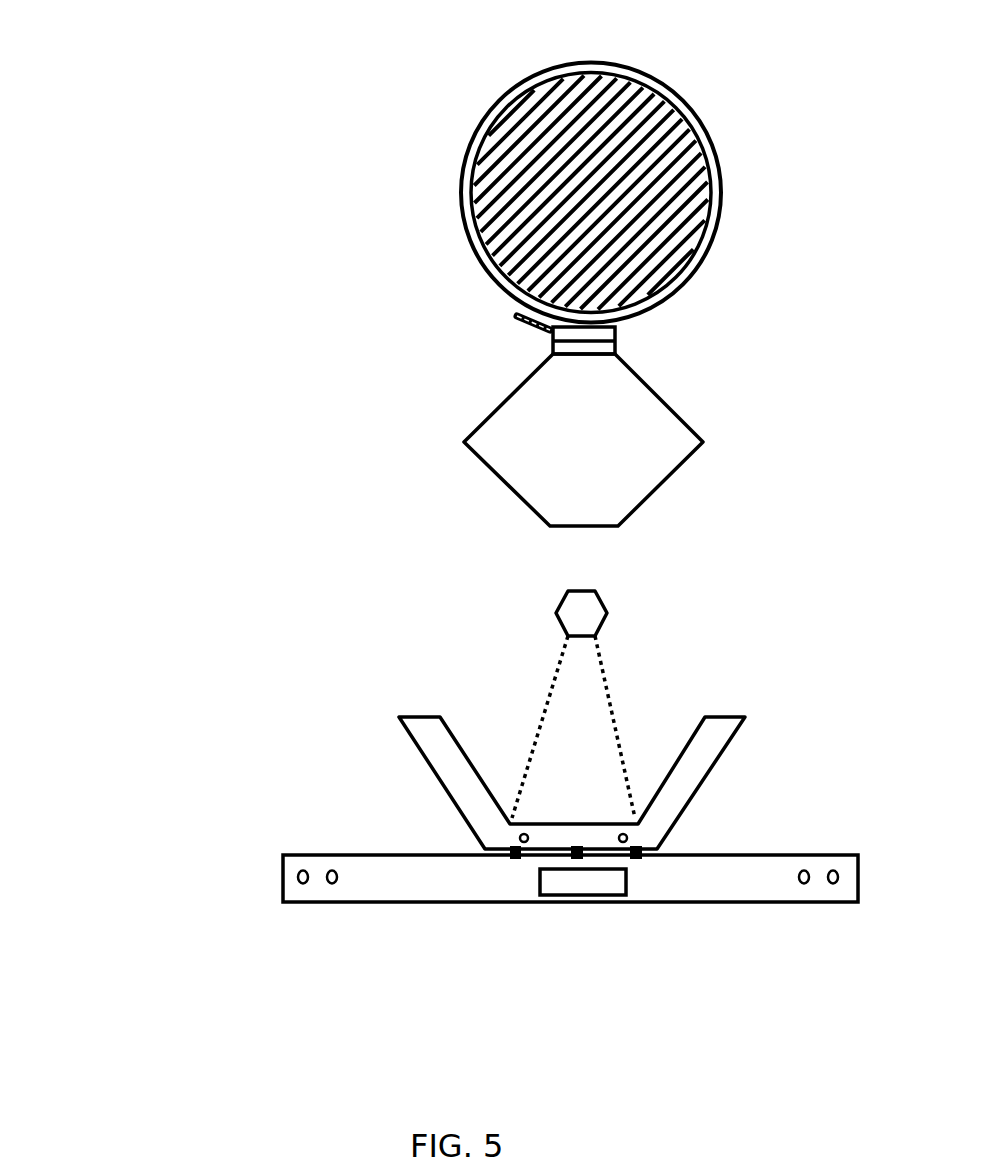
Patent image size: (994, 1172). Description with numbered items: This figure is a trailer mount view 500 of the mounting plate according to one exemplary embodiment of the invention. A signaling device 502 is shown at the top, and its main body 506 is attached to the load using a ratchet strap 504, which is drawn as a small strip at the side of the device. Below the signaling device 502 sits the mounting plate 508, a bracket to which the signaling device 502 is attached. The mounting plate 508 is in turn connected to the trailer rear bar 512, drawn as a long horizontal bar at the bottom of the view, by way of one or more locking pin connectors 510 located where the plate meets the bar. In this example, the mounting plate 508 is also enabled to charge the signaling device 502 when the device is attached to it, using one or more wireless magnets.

The trailer mount view 500 is at (194, 91).
The signaling device 502 is at (702, 117).
The ratchet strap 504 is at (511, 313).
The main body 506 is at (573, 611).
The mounting plate 508 is at (437, 782).
The locking pin connectors 510 is at (632, 855).
The trailer rear bar 512 is at (805, 902).